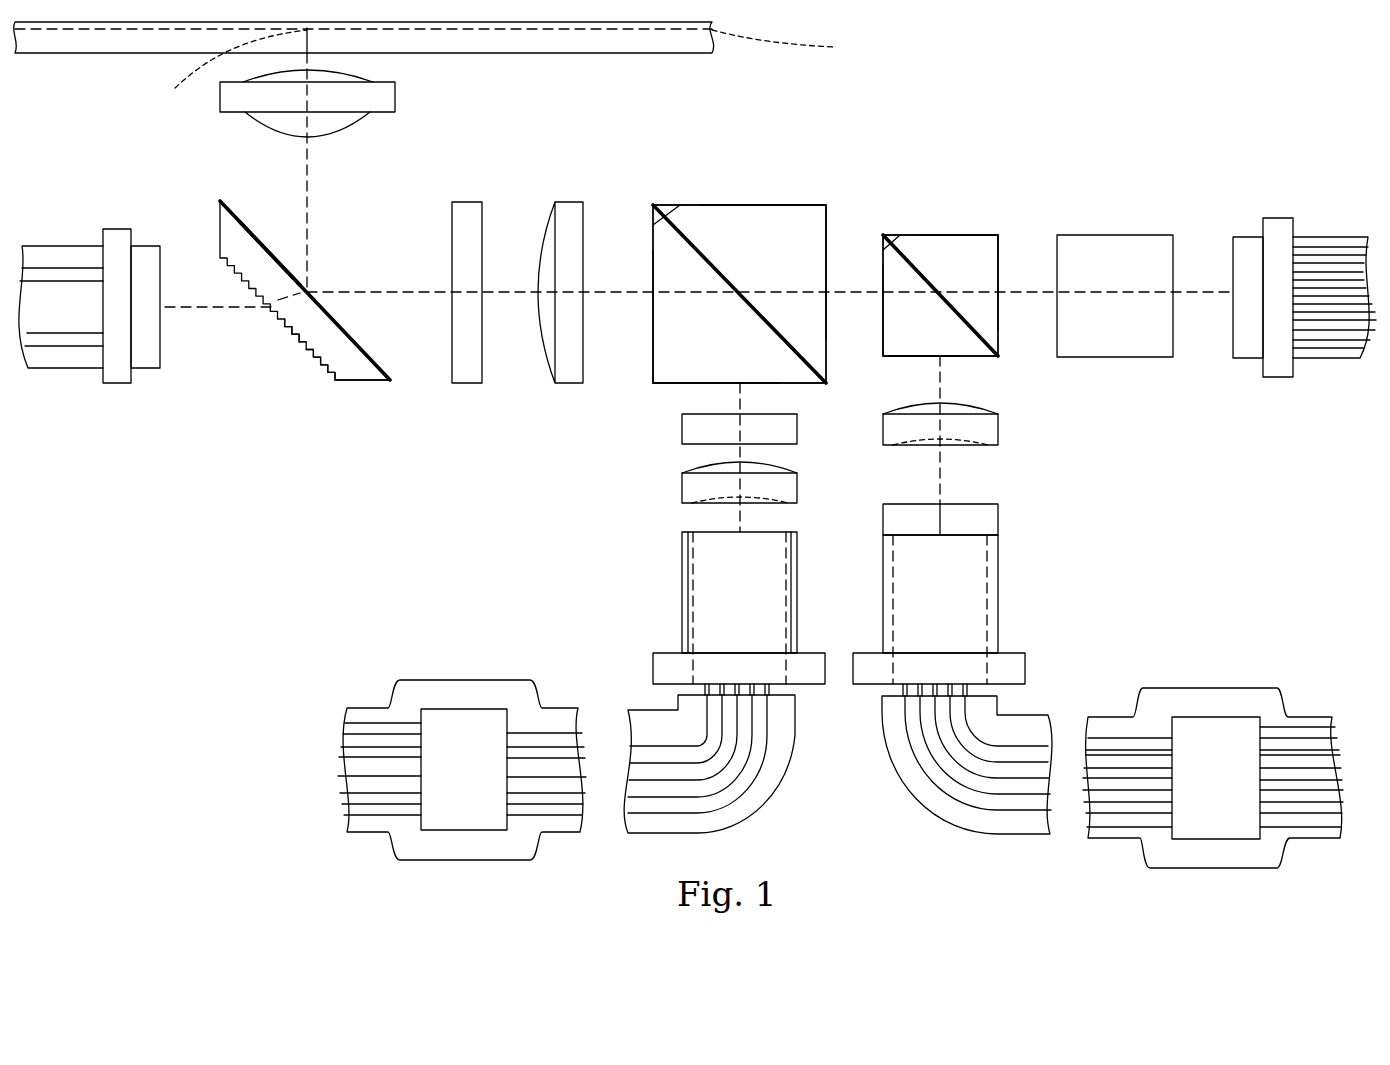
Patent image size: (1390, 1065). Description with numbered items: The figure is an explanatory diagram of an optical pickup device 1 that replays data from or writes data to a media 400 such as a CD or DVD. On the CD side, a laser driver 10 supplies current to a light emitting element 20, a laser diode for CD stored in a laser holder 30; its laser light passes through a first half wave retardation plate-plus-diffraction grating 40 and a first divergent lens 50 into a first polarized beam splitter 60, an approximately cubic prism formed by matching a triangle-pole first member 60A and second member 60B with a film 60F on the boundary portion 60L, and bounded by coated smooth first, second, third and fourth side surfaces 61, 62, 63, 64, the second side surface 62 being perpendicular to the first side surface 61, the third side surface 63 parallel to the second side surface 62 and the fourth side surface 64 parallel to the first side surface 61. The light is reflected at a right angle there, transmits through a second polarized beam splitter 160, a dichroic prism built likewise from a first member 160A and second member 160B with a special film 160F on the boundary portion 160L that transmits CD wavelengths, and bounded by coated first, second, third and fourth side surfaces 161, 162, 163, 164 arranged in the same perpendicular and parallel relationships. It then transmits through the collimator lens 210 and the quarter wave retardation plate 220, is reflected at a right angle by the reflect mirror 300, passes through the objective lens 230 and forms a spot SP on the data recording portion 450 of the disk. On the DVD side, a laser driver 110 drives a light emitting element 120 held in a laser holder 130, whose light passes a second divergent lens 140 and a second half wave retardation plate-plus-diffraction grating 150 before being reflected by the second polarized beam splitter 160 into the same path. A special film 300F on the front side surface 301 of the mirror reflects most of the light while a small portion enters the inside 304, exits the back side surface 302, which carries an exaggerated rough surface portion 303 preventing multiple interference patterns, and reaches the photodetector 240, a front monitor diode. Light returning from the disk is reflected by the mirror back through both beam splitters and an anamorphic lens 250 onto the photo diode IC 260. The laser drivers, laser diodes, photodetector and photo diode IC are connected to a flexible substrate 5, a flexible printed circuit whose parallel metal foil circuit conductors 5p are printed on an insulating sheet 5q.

The optical pickup device 1 is at (240, 590).
The flexible substrate 5 is at (70, 378).
The circuit conductors 5p is at (1005, 736).
The insulating sheet 5q is at (1278, 700).
The laser driver for CD 10 is at (1220, 712).
The light emitting element for CD 20 is at (995, 598).
The laser holder 30 is at (998, 557).
The first half wave retardation plate-plus-diffraction grating 40 is at (1002, 518).
The first divergent lens 50 is at (1002, 432).
The first polarized beam splitter 60 is at (961, 230).
The first member 60A is at (897, 329).
The second member 60B is at (984, 320).
The film 60F is at (916, 262).
The boundary portion 60L is at (896, 256).
The first side surface 61 is at (976, 358).
The second side surface 62 is at (882, 283).
The third side surface 63 is at (999, 282).
The fourth side surface 64 is at (984, 234).
The laser driver for DVD 110 is at (462, 704).
The light emitting element for DVD 120 is at (688, 598).
The laser holder 130 is at (682, 553).
The second divergent lens 140 is at (678, 488).
The second half wave retardation plate-plus-diffraction grating 150 is at (678, 430).
The second polarized beam splitter 160 is at (729, 200).
The first member 160A is at (668, 354).
The second member 160B is at (697, 218).
The special film 160F is at (790, 356).
The boundary portion 160L is at (653, 228).
The first side surface 161 is at (686, 384).
The second side surface 162 is at (652, 280).
The third side surface 163 is at (828, 225).
The fourth side surface 164 is at (770, 204).
The collimator lens 210 is at (550, 198).
The quarter wave retardation plate 220 is at (448, 200).
The objective lens 230 is at (408, 97).
The photodetector 240 is at (116, 225).
The anamorphic lens 250 is at (1116, 232).
The photo diode IC 260 is at (1279, 215).
The reflect mirror 300 is at (282, 340).
The special film 300F is at (258, 238).
The front side surface 301 is at (393, 368).
The back side surface 302 is at (325, 370).
The rough surface portion 303 is at (306, 352).
The inside of the mirror 304 is at (350, 366).
The media 400 is at (635, 58).
The data recording portion 450 is at (801, 48).
The spot SP is at (225, 71).